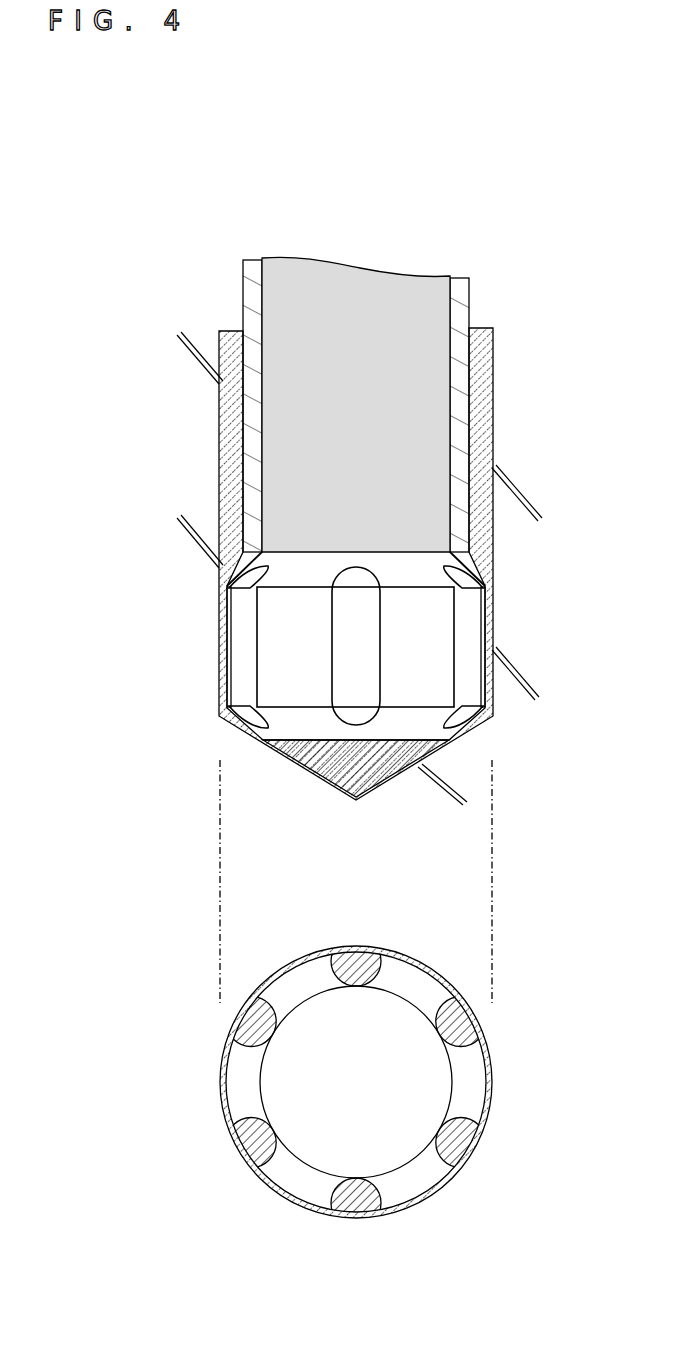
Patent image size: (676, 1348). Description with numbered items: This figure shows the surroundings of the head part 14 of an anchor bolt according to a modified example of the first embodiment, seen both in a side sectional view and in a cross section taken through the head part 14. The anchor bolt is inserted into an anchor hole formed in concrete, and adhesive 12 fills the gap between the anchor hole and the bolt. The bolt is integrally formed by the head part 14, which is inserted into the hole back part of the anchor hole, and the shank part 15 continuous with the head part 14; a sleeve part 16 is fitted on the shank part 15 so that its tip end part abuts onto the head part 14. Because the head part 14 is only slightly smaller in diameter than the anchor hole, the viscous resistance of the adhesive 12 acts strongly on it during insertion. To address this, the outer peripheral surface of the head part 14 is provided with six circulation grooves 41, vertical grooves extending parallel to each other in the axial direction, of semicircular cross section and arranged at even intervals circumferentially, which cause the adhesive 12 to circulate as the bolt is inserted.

The adhesive 12 is at (482, 340).
The head part 14 is at (507, 618).
The shank part 15 is at (466, 387).
The sleeve part 16 is at (458, 437).
The circulation grooves 41 is at (355, 680).